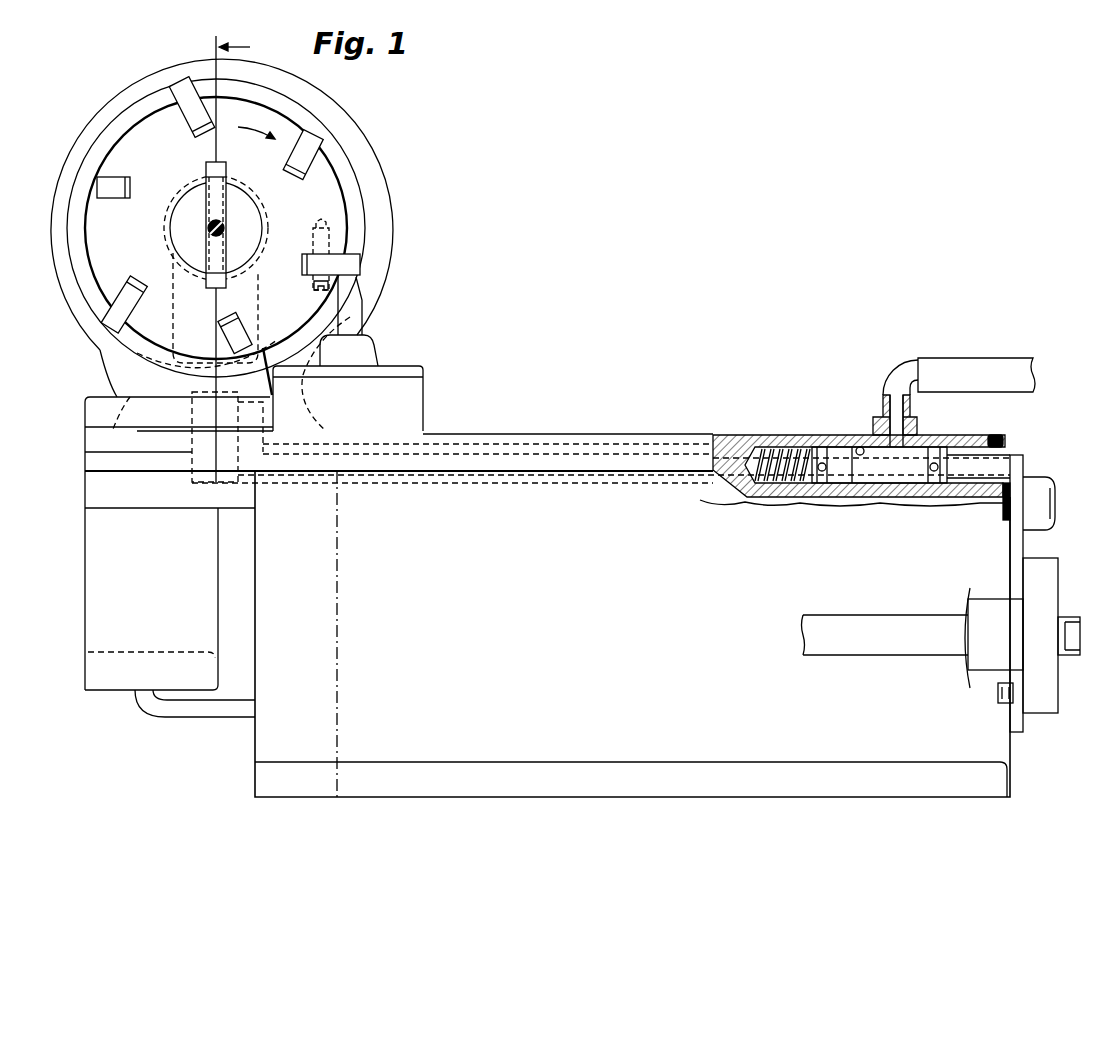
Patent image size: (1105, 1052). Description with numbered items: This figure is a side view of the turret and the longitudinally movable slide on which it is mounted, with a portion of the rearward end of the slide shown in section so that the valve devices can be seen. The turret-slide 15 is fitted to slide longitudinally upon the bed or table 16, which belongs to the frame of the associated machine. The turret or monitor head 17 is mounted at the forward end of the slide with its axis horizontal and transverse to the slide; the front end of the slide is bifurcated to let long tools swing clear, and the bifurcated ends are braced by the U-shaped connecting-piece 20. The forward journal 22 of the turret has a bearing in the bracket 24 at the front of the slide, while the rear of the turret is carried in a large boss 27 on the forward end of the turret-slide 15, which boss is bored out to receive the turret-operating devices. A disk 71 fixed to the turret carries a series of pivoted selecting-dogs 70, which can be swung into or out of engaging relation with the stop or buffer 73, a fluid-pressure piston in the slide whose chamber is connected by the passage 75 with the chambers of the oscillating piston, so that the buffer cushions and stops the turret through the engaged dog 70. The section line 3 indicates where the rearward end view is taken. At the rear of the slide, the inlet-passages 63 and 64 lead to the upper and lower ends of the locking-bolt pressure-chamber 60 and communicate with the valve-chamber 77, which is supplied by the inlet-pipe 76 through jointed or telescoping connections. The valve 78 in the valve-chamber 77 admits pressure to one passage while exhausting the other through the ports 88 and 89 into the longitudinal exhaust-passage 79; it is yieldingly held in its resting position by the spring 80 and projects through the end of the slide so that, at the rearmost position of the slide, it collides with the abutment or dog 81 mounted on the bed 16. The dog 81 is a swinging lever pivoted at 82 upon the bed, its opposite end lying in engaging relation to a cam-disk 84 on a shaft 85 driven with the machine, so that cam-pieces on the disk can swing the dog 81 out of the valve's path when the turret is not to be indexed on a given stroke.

The section line 3 3 is at (275, 418).
The turret-slide 15 is at (98, 493).
The bed or table 16 is at (536, 622).
The turret or monitor head 17 is at (357, 187).
The U-shaped connecting-piece 20 is at (98, 671).
The journal 22 is at (165, 232).
The bracket 24 is at (118, 394).
The boss 27 is at (362, 138).
The pressure-chamber 60 is at (135, 452).
The inlet-passage 63 is at (505, 447).
The inlet-passage 64 is at (522, 482).
The selecting-dogs 70 is at (196, 113).
The disk 71 is at (280, 127).
The stop or buffer 73 is at (352, 322).
The passage 75 is at (206, 712).
The inlet-pipe 76 is at (975, 362).
The valve-chamber 77 is at (878, 490).
The valve 78 is at (836, 448).
The longitudinal exhaust-passage 79 is at (1005, 455).
The spring 80 is at (785, 455).
The abutment or dog 81 is at (1023, 458).
The pivot 82 is at (1056, 496).
The cam-disk 84 is at (1050, 585).
The shaft 85 is at (905, 645).
The port 88 is at (823, 497).
The port 89 is at (935, 497).